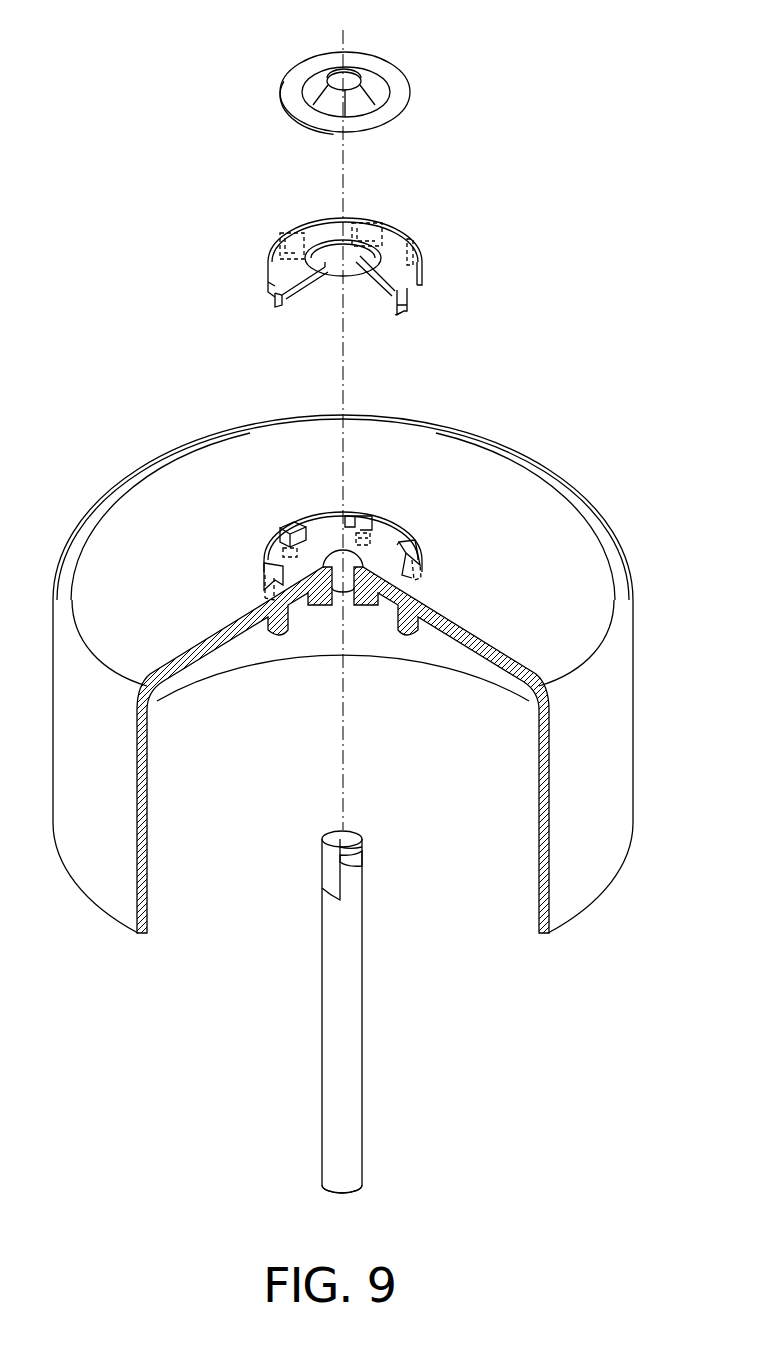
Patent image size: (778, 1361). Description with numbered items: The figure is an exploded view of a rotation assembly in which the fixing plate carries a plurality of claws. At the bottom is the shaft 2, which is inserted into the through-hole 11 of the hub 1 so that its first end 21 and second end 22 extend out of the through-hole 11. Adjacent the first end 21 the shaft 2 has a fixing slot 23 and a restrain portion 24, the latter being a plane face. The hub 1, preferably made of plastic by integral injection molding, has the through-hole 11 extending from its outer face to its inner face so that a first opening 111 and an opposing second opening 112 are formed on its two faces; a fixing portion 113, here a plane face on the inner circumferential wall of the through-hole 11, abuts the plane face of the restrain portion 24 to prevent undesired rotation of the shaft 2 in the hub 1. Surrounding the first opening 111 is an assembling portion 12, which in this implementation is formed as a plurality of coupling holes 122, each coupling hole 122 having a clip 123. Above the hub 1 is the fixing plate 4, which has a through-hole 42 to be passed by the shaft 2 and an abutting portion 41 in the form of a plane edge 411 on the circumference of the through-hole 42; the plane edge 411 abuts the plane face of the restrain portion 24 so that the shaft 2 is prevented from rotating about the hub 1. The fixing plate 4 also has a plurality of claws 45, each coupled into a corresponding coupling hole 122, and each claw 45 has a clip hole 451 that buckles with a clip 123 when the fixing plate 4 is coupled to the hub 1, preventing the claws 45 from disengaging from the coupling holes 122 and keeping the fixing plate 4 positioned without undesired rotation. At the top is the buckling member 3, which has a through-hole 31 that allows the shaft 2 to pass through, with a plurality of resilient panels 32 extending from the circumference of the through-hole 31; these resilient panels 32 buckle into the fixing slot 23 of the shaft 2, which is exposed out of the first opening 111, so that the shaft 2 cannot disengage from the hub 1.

The hub 1 is at (120, 513).
The through-hole 11 is at (338, 540).
The first opening 111 is at (405, 540).
The second opening 112 is at (346, 600).
The fixing portion 113 is at (303, 523).
The assembling portion 12 is at (420, 527).
The coupling hole 122 is at (288, 525).
The clip 123 is at (287, 528).
The shaft 2 is at (348, 1045).
The first end 21 is at (370, 830).
The second end 22 is at (370, 1197).
The fixing slot 23 is at (355, 862).
The restrain portion 24 is at (327, 858).
The buckling member 3 is at (397, 98).
The through-hole 31 is at (350, 82).
The resilient panel 32 is at (375, 88).
The fixing plate 4 is at (400, 243).
The abutting portion 41 is at (312, 288).
The plane edge 411 is at (335, 242).
The through-hole 42 is at (327, 255).
The claw 45 is at (275, 307).
The clip hole 451 is at (268, 282).